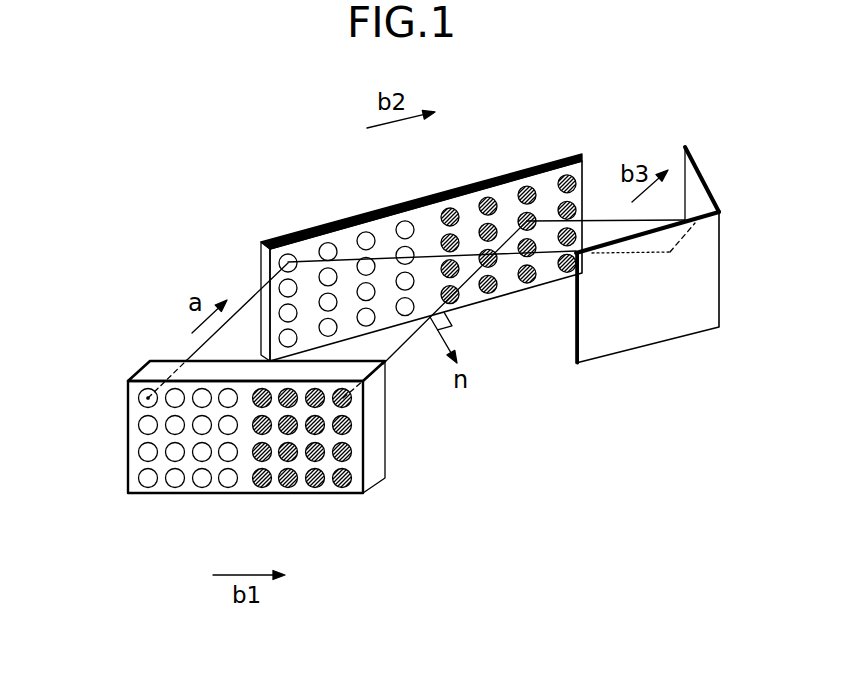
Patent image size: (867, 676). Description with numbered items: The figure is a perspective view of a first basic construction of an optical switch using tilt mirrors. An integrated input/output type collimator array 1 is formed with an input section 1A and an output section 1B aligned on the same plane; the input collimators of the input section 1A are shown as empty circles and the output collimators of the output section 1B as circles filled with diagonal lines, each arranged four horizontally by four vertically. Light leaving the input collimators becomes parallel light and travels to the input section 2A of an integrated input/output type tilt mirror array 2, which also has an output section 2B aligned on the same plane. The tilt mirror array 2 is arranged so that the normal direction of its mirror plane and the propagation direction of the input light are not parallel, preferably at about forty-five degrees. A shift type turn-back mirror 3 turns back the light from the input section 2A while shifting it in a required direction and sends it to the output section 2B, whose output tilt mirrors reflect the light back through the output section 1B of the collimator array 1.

The collimator array 1 is at (222, 457).
The input section of collimator array 1A is at (191, 472).
The output section of collimator array 1B is at (305, 472).
The tilt mirror array 2 is at (377, 236).
The input section of tilt mirror array 2A is at (344, 249).
The output section of tilt mirror array 2B is at (505, 208).
The shift type turn-back mirror 3 is at (706, 183).